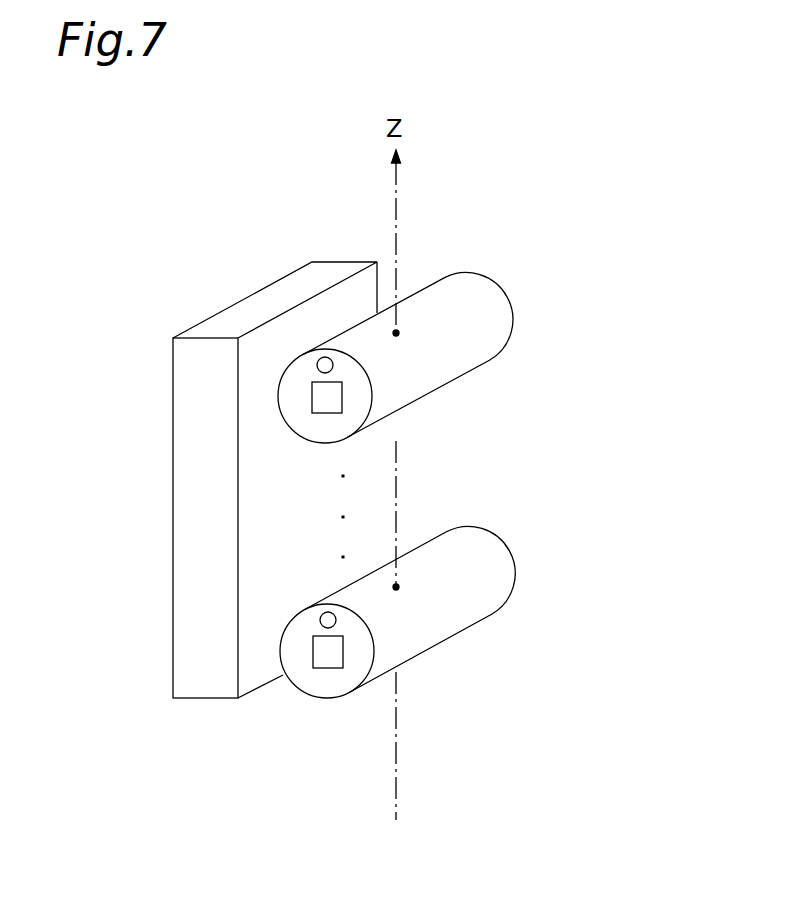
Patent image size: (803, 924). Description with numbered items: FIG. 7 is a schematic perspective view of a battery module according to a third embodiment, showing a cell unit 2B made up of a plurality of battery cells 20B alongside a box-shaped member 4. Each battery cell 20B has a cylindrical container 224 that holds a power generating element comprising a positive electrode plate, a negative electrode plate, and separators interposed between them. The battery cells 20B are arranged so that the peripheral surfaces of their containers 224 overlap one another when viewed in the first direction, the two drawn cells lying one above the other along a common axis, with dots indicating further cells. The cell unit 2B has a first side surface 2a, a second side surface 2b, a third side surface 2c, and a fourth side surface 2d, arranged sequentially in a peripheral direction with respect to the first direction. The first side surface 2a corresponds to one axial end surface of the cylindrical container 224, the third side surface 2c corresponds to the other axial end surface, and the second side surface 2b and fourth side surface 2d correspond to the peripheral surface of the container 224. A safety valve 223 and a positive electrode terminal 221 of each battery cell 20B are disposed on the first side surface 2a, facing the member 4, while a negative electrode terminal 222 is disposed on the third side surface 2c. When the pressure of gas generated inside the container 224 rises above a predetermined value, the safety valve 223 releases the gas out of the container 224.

The support member 4 is at (185, 450).
The cell unit 2B is at (369, 438).
The battery cell 20B is at (458, 448).
The first side surface 2a is at (290, 402).
The second side surface 2b is at (345, 315).
The third side surface 2c is at (518, 290).
The fourth side surface 2d is at (424, 375).
The positive electrode terminal 221 is at (328, 395).
The negative electrode terminal 222 is at (514, 306).
The safety valve 223 is at (318, 364).
The cylindrical container 224 is at (443, 363).